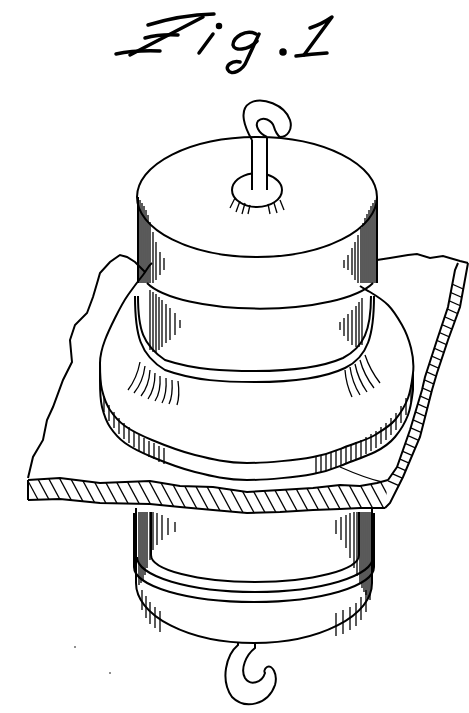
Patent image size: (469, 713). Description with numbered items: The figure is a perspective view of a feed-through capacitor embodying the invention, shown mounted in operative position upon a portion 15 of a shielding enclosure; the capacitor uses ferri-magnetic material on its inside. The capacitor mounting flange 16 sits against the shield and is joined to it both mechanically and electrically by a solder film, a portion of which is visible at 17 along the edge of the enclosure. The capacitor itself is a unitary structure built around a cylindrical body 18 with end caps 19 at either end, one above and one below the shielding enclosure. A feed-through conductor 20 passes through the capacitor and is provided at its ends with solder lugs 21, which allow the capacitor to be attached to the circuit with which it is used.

The portion of a shielding enclosure 15 is at (438, 267).
The capacitor mounting flange 16 is at (392, 395).
The solder film 17 is at (400, 480).
The cylindrical body 18 is at (254, 442).
The end caps 19 is at (160, 177).
The feed-through conductor 20 is at (260, 172).
The solder lugs 21 is at (282, 107).